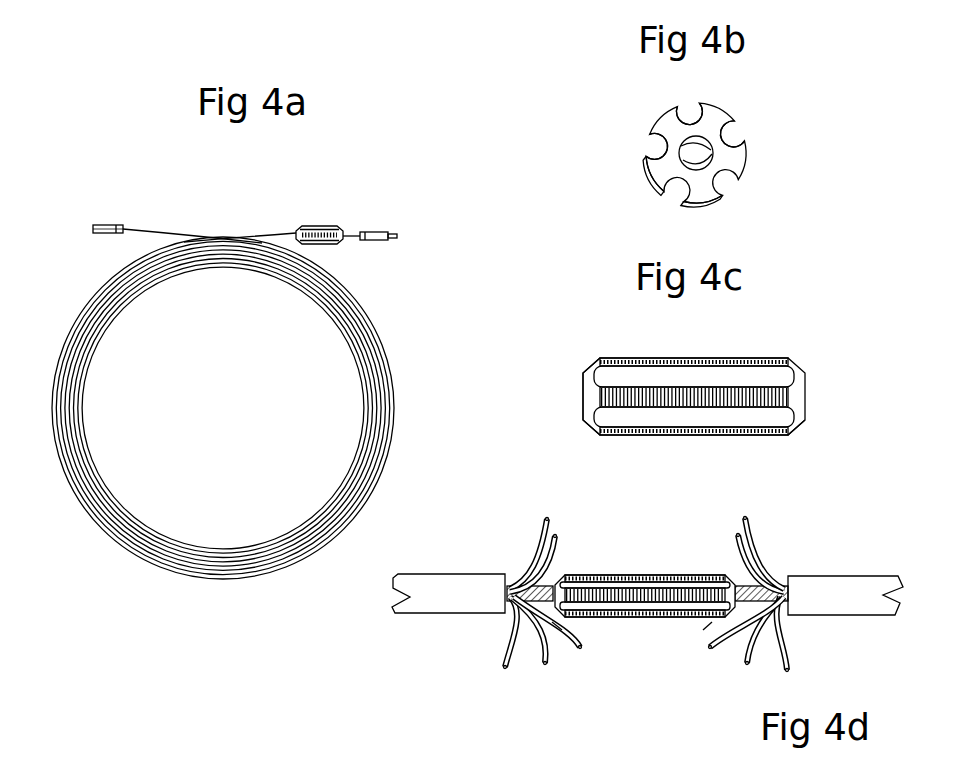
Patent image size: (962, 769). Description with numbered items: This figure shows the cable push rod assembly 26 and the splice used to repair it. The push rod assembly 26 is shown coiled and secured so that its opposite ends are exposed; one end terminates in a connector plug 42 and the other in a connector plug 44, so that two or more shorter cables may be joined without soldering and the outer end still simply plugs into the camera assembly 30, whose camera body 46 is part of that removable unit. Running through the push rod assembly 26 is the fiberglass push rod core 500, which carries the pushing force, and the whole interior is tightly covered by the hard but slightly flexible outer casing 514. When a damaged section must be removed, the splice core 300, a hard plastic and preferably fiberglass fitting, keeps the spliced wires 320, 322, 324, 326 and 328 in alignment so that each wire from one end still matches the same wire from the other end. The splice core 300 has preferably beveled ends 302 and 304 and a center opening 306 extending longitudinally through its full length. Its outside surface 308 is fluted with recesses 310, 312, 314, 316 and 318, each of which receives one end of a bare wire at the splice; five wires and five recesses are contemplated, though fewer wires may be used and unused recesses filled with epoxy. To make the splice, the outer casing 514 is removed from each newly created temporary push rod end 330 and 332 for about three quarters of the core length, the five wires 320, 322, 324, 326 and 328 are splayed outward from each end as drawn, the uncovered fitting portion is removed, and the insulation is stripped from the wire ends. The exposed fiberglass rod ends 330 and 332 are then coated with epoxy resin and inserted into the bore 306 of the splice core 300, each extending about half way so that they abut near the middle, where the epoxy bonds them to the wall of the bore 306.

In FIG. 4A, the push rod assembly 26 is at (72, 437).
In FIG. 4D, the push rod assembly 26 is at (421, 616).
In FIG. 4A, the camera assembly 30 is at (405, 248).
In FIG. 4A, the connector plug 42 is at (107, 224).
In FIG. 4A, the connector plug 44 is at (318, 226).
In FIG. 4A, the camera body 46 is at (377, 232).
In FIG. 4A, the splice core 300 is at (362, 242).
In FIG. 4B, the splice core 300 is at (734, 106).
In FIG. 4C, the splice core 300 is at (664, 350).
In FIG. 4D, the splice core 300 is at (647, 568).
In FIG. 4C, the end of splice core 302 is at (592, 422).
In FIG. 4C, the end of splice core 304 is at (797, 398).
In FIG. 4B, the center opening 306 is at (707, 147).
In FIG. 4C, the center opening 306 is at (592, 400).
In FIG. 4C, the outside surface 308 is at (687, 433).
In FIG. 4B, the recess 310 is at (692, 110).
In FIG. 4B, the recess 312 is at (658, 138).
In FIG. 4C, the recess 312 is at (747, 435).
In FIG. 4B, the recess 314 is at (663, 190).
In FIG. 4C, the recess 314 is at (773, 418).
In FIG. 4B, the recess 316 is at (720, 193).
In FIG. 4C, the recess 316 is at (780, 375).
In FIG. 4D, the recess 316 is at (547, 527).
In FIG. 4B, the recess 318 is at (733, 132).
In FIG. 4D, the wire 320 is at (558, 650).
In FIG. 4D, the wire 322 is at (537, 658).
In FIG. 4D, the wire 324 is at (498, 657).
In FIG. 4D, the wire 326 is at (767, 522).
In FIG. 4D, the wire 328 is at (546, 543).
In FIG. 4D, the temporary push rod end 330 is at (552, 622).
In FIG. 4D, the temporary push rod end 332 is at (703, 630).
In FIG. 4A, the push rod core 500 is at (120, 234).
In FIG. 4D, the outer casing 514 is at (447, 590).